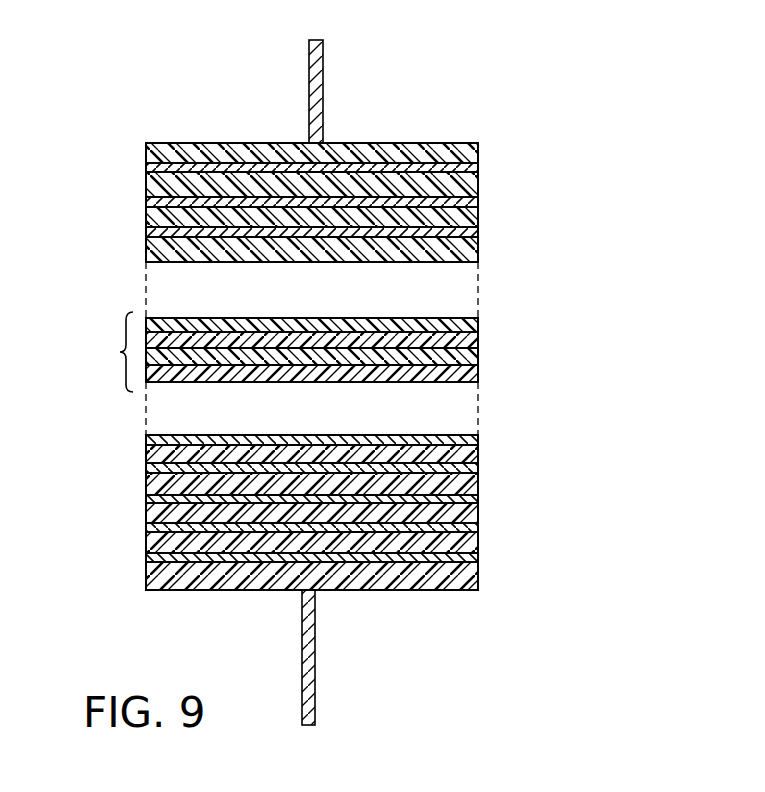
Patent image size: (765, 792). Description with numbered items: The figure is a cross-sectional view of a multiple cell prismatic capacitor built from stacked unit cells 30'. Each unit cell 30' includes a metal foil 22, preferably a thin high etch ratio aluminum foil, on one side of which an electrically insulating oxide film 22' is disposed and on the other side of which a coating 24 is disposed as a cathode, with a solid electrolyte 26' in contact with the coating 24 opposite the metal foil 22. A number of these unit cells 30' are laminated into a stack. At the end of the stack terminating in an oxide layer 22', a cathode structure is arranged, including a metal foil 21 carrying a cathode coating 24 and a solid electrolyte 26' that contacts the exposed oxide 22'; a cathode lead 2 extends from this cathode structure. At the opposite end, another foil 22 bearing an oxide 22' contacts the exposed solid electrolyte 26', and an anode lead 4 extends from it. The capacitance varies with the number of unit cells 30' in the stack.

The cathode lead 2 is at (323, 68).
The anode lead 4 is at (316, 698).
The metal foil 21 is at (407, 143).
The metal foil 22 is at (401, 437).
The electrically insulating oxide film 22' is at (392, 389).
The coating 24 is at (478, 167).
The solid electrolyte 26' is at (375, 348).
The unit cell 30' is at (100, 352).